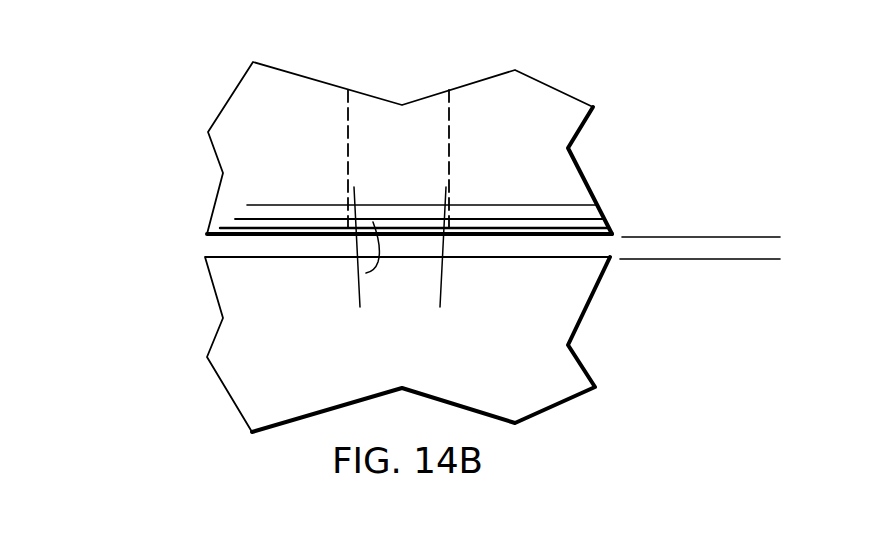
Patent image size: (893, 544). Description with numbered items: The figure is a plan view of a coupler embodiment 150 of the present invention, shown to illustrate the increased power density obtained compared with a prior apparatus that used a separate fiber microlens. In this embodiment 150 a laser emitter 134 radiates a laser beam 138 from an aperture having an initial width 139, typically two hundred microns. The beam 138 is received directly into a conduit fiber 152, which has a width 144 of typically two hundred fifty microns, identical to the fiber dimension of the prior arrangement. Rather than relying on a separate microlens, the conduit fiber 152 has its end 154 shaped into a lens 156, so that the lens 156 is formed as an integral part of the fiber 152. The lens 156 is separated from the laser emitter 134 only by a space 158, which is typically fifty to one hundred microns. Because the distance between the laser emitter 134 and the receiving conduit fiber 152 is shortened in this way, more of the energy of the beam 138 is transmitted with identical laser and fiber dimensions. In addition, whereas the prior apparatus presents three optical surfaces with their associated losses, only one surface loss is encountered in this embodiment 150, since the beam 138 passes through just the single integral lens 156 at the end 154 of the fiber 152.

The embodiment 150 is at (176, 142).
The conduit fiber 152 is at (454, 138).
The end 154 is at (350, 224).
The width 144 is at (439, 160).
The lens 156 is at (354, 272).
The laser beam 138 is at (440, 245).
The initial width 139 is at (482, 293).
The laser emitter 134 is at (208, 338).
The space 158 is at (758, 198).